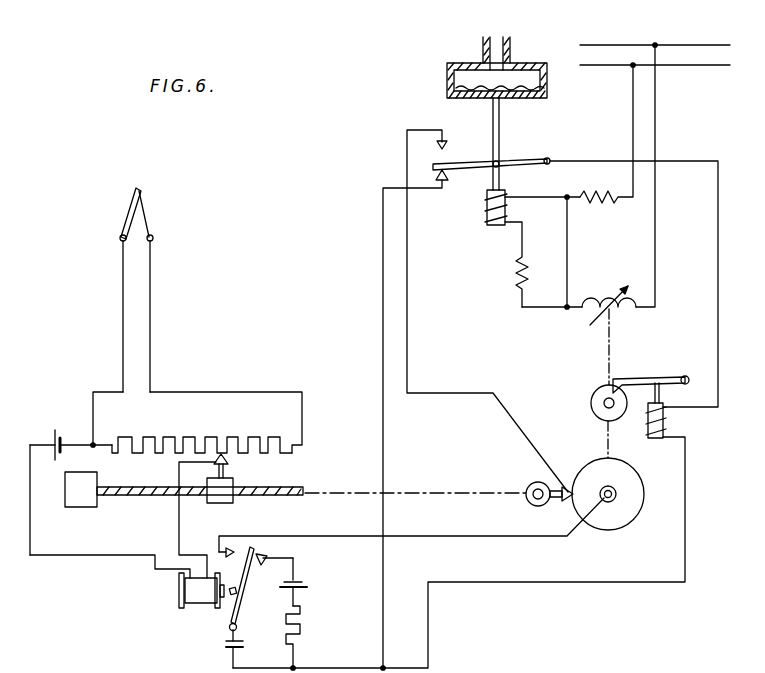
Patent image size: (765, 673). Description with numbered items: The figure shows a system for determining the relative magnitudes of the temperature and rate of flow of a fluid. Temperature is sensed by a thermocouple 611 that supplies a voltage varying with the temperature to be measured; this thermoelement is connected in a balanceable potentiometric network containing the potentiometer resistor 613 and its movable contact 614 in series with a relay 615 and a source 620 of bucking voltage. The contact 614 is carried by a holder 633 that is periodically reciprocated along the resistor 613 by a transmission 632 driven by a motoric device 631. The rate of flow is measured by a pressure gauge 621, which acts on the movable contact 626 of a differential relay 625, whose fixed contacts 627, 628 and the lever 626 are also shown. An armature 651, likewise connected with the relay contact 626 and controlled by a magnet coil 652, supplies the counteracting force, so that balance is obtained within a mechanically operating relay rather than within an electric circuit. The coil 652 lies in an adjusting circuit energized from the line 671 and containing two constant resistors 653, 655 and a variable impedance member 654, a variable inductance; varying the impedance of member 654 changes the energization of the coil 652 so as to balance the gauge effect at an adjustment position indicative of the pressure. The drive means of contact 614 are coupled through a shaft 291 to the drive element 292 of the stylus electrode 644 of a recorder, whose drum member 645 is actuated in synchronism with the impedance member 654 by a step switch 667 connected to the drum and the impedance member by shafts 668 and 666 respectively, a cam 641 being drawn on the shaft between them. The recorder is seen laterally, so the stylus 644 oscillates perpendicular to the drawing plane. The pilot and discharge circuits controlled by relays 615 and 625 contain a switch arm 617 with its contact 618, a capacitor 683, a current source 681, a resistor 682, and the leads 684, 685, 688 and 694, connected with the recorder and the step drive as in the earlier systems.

The thermocouple 611 is at (108, 214).
The potentiometer resistor 613 is at (193, 441).
The movable contact 614 is at (228, 469).
The relay 615 is at (190, 595).
The switch arm 617 is at (265, 556).
The contact 618 is at (230, 551).
The source of bucking voltage 620 is at (55, 432).
The pressure gauge 621 is at (518, 78).
The differential relay 625 is at (543, 151).
The movable contact 626 is at (466, 162).
The contact 627 is at (456, 177).
The contact 628 is at (445, 147).
The motoric device 631 is at (77, 505).
The transmission 632 is at (156, 488).
The holder 633 is at (216, 497).
The cam 641 is at (590, 394).
The stylus electrode 644 is at (561, 502).
The drum member 645 is at (623, 523).
The armature 651 is at (503, 201).
The magnet coil 652 is at (487, 207).
The constant resistor 653 is at (512, 279).
The variable impedance member 654 is at (590, 300).
The constant resistor 655 is at (604, 206).
The shaft 666 is at (612, 337).
The step switch 667 is at (666, 423).
The shaft 668 is at (607, 447).
The line 671 is at (693, 53).
The current source 681 is at (305, 584).
The resistor 682 is at (301, 625).
The capacitor 683 is at (225, 647).
The lead 684 is at (474, 582).
The lead 685 is at (718, 258).
The lead 688 is at (383, 330).
The conductor 694 is at (410, 313).
The shaft 291 is at (418, 491).
The drive element 292 is at (531, 486).